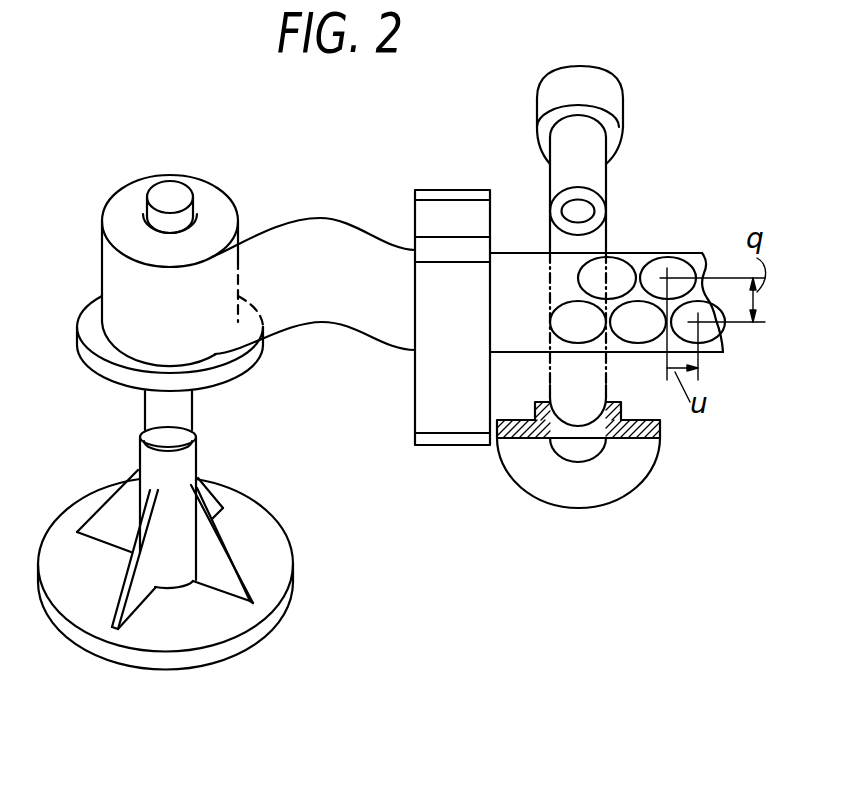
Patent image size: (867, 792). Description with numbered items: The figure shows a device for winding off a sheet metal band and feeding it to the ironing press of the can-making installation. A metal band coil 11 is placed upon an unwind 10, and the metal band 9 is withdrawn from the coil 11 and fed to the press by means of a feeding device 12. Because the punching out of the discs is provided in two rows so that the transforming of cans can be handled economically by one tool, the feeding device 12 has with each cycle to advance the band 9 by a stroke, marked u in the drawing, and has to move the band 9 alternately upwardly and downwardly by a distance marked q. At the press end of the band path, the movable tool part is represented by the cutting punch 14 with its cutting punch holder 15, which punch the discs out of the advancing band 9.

The metal band 9 is at (345, 237).
The unwind 10 is at (183, 460).
The metal band coil 11 is at (203, 190).
The feeding device 12 is at (452, 210).
The cutting punch 14 is at (592, 172).
The cutting punch holder 15 is at (604, 86).